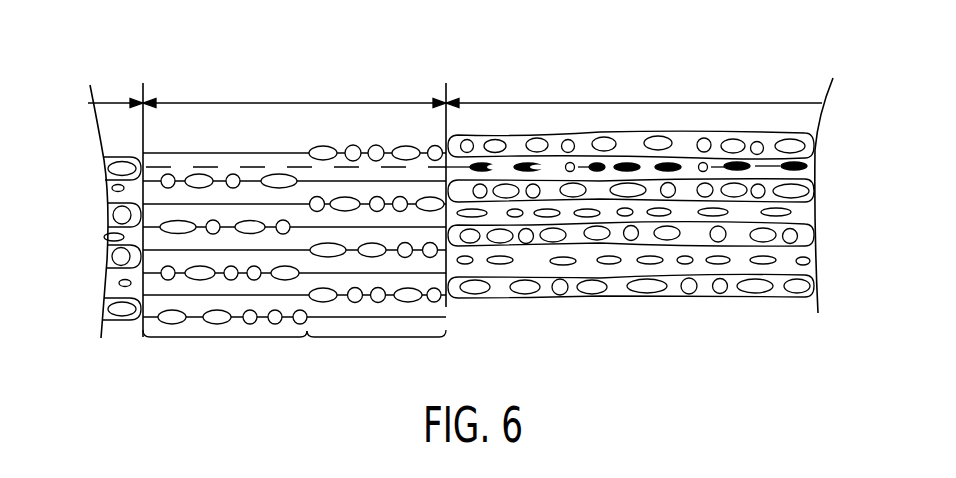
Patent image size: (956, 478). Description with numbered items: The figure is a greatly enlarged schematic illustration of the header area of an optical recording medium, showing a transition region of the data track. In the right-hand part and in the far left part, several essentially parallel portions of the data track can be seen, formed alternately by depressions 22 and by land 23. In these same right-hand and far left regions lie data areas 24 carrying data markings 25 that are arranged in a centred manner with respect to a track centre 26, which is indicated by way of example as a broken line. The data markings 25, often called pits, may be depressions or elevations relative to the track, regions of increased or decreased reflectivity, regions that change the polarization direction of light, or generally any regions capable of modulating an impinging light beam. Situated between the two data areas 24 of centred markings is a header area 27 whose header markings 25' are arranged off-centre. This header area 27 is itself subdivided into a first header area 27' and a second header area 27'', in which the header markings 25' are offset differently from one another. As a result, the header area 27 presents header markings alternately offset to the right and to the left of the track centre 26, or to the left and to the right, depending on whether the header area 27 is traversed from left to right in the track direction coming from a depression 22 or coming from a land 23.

The depression 22 is at (103, 170).
The land 23 is at (108, 188).
The data area 24 is at (455, 91).
The data marking 25 is at (550, 112).
The header marking 25' is at (364, 135).
The track centre 26 is at (498, 167).
The header area 27 is at (294, 196).
The first header area 27' is at (225, 276).
The second header area 27'' is at (376, 263).